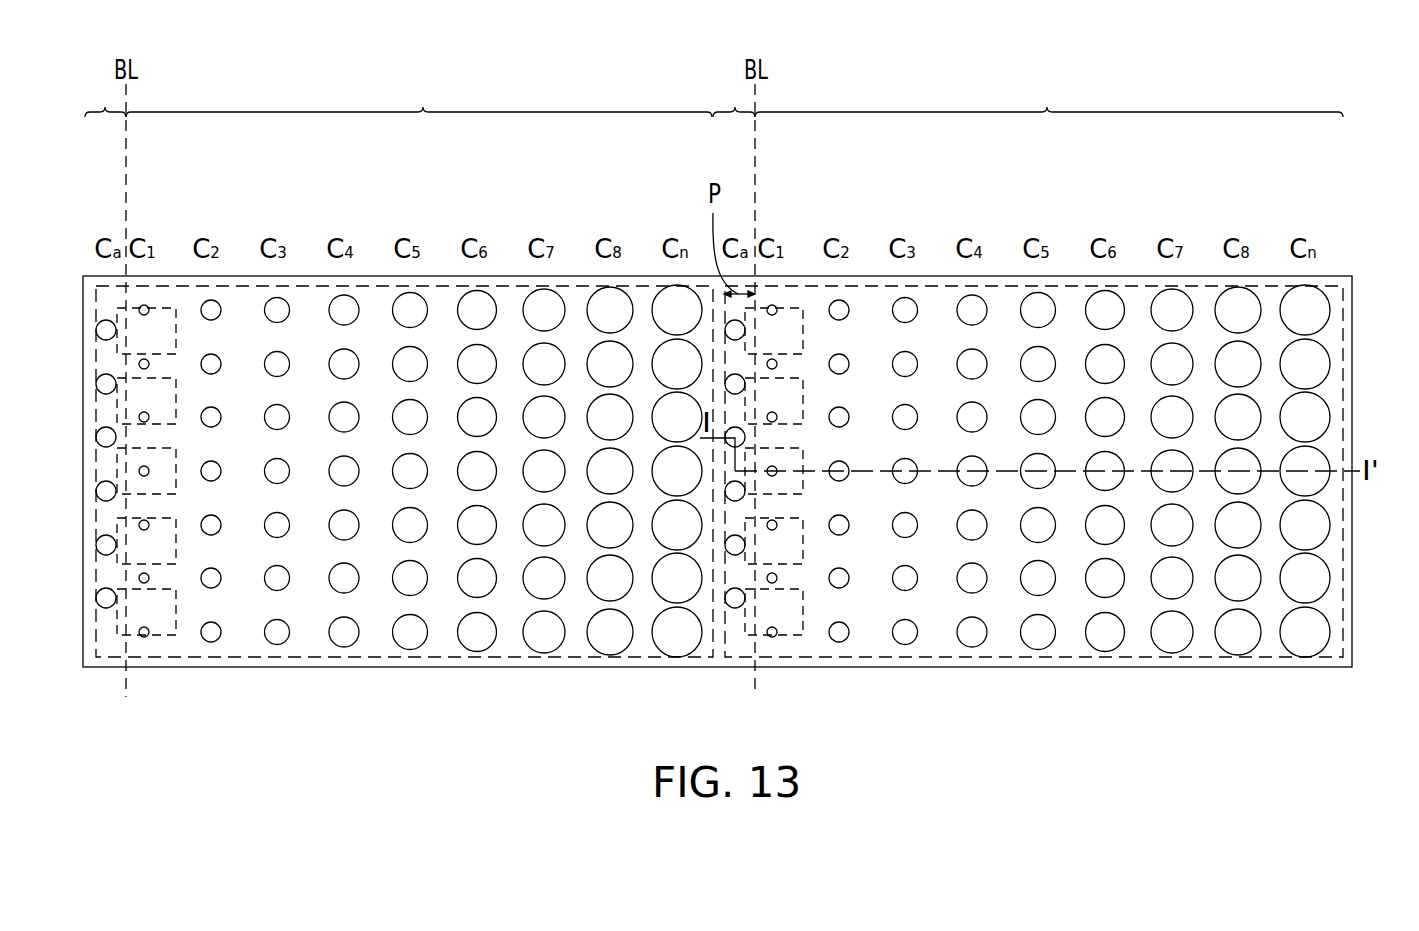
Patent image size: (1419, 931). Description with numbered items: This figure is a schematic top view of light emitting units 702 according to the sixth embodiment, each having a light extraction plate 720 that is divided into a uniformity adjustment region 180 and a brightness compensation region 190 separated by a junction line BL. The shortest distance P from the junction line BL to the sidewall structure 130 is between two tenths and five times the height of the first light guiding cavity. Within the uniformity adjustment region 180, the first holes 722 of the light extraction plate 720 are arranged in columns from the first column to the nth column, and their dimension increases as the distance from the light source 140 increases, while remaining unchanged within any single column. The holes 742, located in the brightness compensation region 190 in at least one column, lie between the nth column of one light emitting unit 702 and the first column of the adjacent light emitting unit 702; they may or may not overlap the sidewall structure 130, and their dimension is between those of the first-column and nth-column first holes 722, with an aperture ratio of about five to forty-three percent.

The sidewall structure 130 is at (88, 304).
The light source 140 is at (161, 302).
The uniformity adjustment region 180 is at (734, 96).
The brightness compensation region 190 is at (420, 96).
The light emitting unit 702 is at (393, 206).
The light extraction plate 720 is at (168, 650).
The first holes 722 is at (1305, 310).
The holes 742 is at (730, 328).